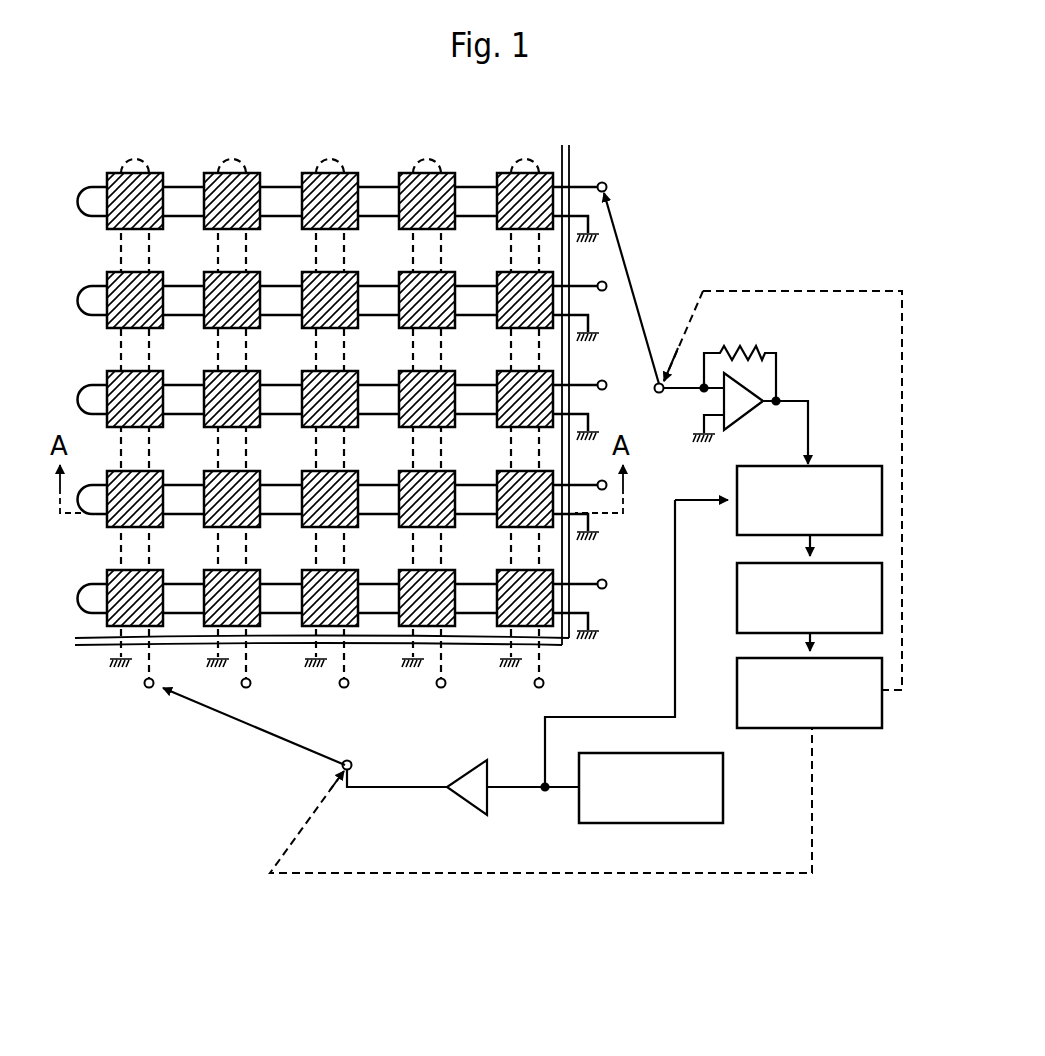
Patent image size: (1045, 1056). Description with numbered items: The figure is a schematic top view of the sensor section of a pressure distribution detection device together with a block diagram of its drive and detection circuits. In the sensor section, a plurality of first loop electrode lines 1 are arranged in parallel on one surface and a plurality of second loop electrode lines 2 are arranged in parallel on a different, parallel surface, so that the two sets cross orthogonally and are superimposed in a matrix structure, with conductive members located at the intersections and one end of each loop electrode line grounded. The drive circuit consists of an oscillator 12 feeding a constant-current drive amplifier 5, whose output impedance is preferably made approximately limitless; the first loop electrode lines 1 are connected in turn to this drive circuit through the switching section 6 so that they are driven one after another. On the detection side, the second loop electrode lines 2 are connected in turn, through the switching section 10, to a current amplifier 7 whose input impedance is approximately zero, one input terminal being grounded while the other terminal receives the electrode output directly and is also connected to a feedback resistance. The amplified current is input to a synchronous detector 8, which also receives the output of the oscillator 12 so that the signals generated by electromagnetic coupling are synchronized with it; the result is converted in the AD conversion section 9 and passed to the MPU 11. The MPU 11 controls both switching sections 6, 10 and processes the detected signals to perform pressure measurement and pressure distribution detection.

The first loop electrode line 1 is at (140, 148).
The second loop electrode line 2 is at (80, 190).
The constant-current drive amplifier 5 is at (463, 805).
The switching section 6 is at (277, 740).
The current amplifier 7 is at (786, 362).
The synchronous detector 8 is at (737, 521).
The AD conversion section 9 is at (737, 606).
The switching section 10 is at (627, 268).
The MPU 11 is at (855, 728).
The oscillator 12 is at (723, 787).